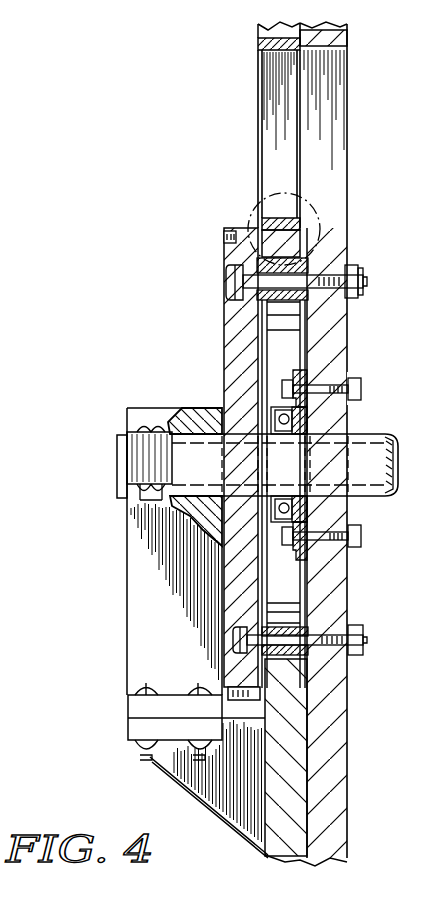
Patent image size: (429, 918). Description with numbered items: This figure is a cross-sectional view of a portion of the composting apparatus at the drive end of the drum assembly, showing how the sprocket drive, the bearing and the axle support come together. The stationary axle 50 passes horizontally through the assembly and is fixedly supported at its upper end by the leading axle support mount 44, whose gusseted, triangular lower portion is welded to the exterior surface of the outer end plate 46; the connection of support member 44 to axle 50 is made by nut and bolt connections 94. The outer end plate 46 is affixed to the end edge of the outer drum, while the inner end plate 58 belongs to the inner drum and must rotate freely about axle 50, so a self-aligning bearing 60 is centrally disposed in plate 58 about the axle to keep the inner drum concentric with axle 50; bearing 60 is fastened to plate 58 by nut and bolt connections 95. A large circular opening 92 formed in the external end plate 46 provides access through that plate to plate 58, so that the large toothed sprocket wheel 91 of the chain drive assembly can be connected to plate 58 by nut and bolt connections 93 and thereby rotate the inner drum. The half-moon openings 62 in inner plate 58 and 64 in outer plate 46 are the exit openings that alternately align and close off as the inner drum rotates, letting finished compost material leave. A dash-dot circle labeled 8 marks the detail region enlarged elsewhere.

The detail circle of FIG. 8 is at (262, 207).
The leading axle support mount 44 is at (143, 643).
The outer end plate 46 is at (293, 747).
The stationary axle 50 is at (385, 497).
The inner end plate 58 is at (337, 788).
The bearing member 60 is at (292, 434).
The half-moon opening 62 is at (328, 168).
The half-moon opening 64 is at (272, 153).
The toothed sprocket wheel 91 is at (240, 340).
The circular opening 92 is at (278, 357).
The nut and bolt connections 93 is at (366, 270).
The nut and bolt connections 94 is at (140, 418).
The nut and bolt connections 95 is at (364, 388).